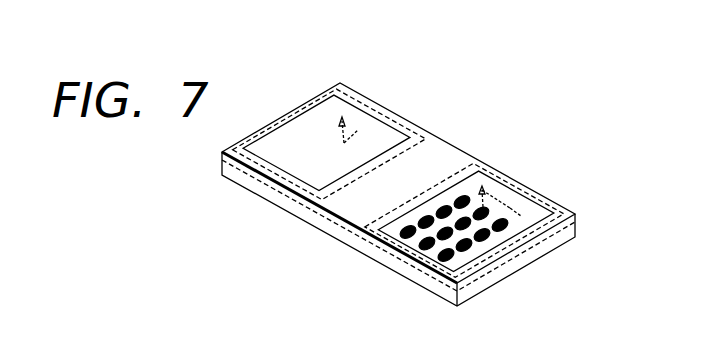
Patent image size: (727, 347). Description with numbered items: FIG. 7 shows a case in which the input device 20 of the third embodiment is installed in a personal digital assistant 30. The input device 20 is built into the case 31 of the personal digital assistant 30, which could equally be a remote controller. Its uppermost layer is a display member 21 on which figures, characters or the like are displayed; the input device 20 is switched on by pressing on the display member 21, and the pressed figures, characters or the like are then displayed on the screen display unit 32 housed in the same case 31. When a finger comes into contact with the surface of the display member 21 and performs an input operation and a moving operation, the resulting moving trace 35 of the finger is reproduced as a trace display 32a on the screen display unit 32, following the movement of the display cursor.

The personal digital assistant 30 is at (455, 112).
The case 31 is at (343, 232).
The screen display unit 32 is at (307, 132).
The trace display 32a is at (367, 110).
The input device 20 is at (522, 190).
The display member 21 is at (521, 219).
The moving trace 35 is at (532, 201).